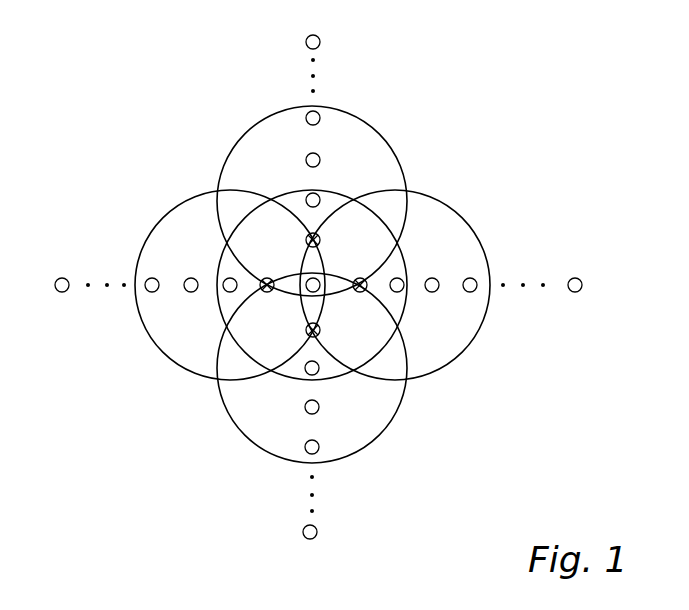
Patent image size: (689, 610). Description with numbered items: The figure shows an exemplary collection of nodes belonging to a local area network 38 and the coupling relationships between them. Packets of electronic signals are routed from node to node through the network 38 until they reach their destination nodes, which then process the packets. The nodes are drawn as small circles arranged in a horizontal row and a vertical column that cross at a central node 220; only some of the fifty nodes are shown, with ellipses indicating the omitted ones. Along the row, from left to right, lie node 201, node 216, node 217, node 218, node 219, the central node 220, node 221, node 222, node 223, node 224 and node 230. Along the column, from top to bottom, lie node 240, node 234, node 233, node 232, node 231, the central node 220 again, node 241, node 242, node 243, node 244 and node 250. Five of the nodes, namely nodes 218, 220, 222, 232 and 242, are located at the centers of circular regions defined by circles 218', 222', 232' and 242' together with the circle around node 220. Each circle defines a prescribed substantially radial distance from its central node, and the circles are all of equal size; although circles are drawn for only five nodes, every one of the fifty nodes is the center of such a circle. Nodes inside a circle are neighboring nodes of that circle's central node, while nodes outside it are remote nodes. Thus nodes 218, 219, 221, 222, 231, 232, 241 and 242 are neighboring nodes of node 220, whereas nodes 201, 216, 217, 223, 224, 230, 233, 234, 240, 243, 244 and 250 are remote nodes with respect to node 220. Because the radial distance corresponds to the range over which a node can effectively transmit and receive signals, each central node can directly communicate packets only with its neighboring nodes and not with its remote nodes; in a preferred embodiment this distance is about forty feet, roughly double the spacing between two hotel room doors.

The local area network 38 is at (500, 335).
The node 201 is at (57, 291).
The node 216 is at (148, 292).
The node 217 is at (191, 278).
The node 218 is at (208, 309).
The circle 218' is at (230, 263).
The node 219 is at (266, 292).
The node 220 is at (310, 278).
The node 221 is at (359, 292).
The node 222 is at (421, 258).
The circle 222' is at (417, 273).
The node 223 is at (433, 292).
The node 224 is at (475, 278).
The node 230 is at (582, 282).
The node 231 is at (321, 242).
The node 232 is at (343, 184).
The circle 232' is at (346, 201).
The node 233 is at (306, 160).
The node 234 is at (321, 118).
The node 240 is at (320, 38).
The node 241 is at (320, 335).
The node 242 is at (340, 382).
The circle 242' is at (302, 373).
The node 243 is at (305, 408).
The node 244 is at (319, 443).
The node 250 is at (318, 527).